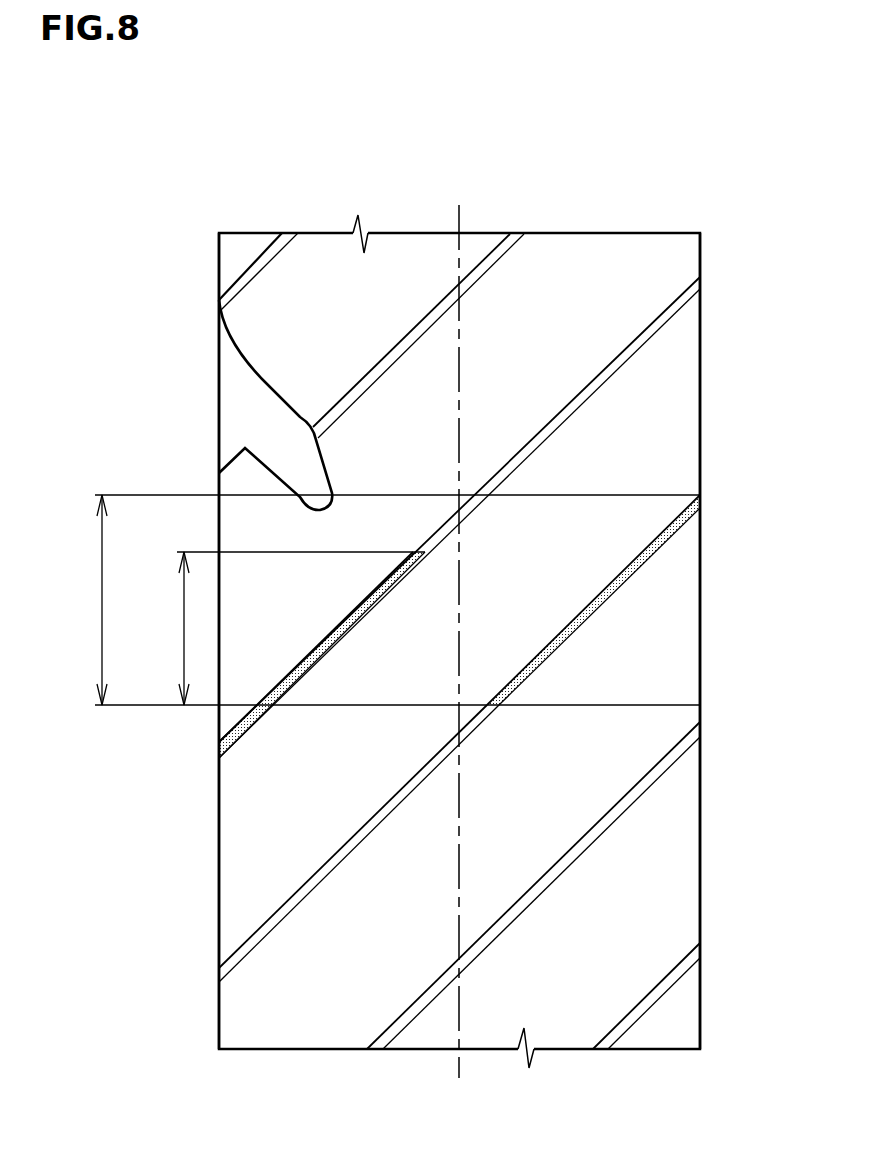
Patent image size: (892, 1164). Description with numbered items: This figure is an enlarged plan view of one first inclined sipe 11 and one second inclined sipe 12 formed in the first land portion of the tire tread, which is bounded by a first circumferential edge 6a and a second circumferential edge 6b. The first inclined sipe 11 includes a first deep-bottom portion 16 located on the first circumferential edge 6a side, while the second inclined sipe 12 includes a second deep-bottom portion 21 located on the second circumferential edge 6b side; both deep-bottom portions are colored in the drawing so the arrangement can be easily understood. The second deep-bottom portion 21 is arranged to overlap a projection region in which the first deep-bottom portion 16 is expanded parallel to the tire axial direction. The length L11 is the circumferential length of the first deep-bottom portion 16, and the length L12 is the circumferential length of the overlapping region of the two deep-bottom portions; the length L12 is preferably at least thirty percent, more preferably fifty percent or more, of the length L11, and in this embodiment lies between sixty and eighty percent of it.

The first circumferential edge 6a is at (700, 920).
The second circumferential edge 6b is at (219, 920).
The first inclined sipe 11 is at (322, 872).
The second inclined sipe 12 is at (607, 368).
The first deep-bottom portion 16 is at (600, 605).
The second deep-bottom portion 21 is at (242, 730).
The length in the tire circumferential direction of the first deep-bottom portion L11 is at (373, 600).
The length in the tire circumferential direction of the overlapping region L12 is at (275, 628).